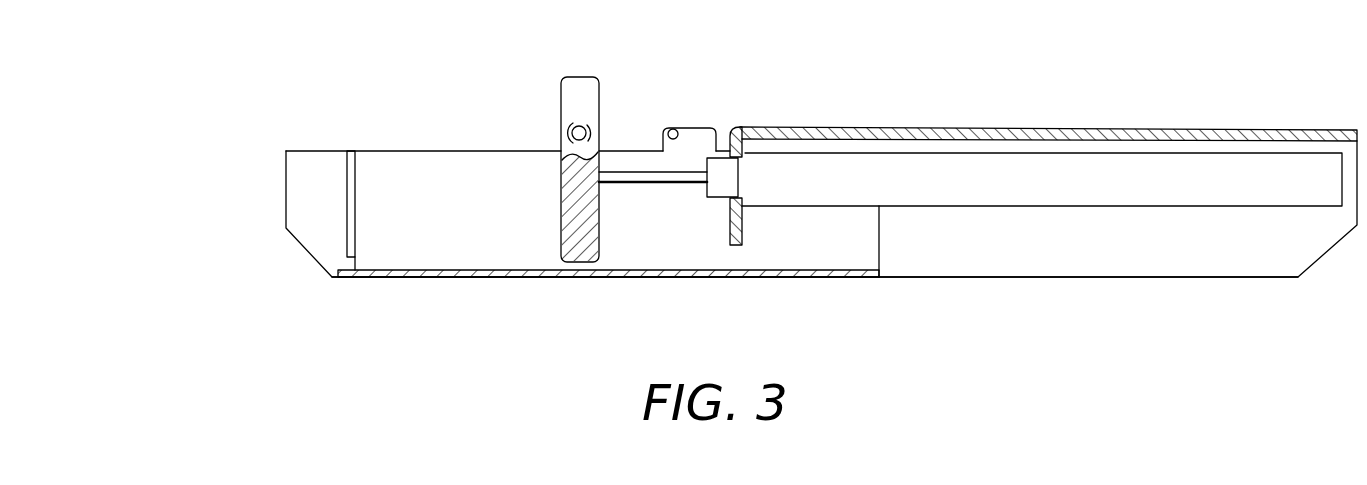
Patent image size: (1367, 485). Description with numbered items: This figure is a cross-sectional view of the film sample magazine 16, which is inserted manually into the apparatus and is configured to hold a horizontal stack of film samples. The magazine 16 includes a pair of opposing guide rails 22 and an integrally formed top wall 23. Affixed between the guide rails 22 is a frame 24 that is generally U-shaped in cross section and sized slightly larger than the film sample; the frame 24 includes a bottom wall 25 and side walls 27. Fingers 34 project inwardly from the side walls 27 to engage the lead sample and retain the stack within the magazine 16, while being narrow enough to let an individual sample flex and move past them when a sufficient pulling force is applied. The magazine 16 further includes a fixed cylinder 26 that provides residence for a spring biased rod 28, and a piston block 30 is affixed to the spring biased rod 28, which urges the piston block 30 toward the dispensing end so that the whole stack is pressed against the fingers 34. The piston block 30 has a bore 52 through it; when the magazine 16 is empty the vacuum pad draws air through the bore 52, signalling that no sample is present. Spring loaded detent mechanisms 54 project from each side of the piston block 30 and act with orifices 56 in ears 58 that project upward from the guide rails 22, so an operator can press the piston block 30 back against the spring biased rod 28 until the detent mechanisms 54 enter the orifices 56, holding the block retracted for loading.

The magazine 16 is at (1092, 81).
The guide rails 22 is at (290, 188).
The top wall 23 is at (1148, 128).
The frame 24 is at (639, 284).
The bottom wall 25 is at (498, 276).
The fixed cylinder 26 is at (1015, 185).
The side walls 27 is at (387, 160).
The spring biased rod 28 is at (651, 180).
The piston block 30 is at (573, 77).
The fingers 34 is at (345, 167).
The bore 52 is at (560, 200).
The spring loaded detent mechanisms 54 is at (583, 131).
The orifices 56 is at (683, 128).
The ears 58 is at (732, 130).